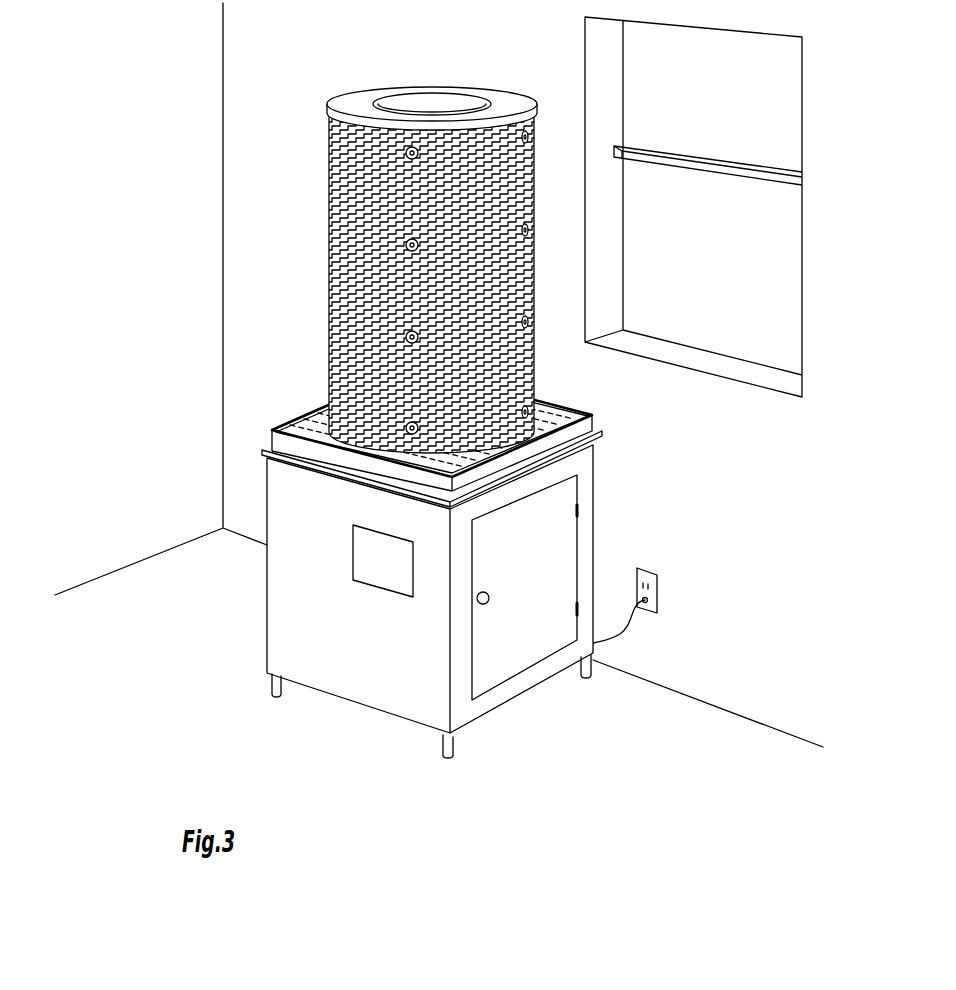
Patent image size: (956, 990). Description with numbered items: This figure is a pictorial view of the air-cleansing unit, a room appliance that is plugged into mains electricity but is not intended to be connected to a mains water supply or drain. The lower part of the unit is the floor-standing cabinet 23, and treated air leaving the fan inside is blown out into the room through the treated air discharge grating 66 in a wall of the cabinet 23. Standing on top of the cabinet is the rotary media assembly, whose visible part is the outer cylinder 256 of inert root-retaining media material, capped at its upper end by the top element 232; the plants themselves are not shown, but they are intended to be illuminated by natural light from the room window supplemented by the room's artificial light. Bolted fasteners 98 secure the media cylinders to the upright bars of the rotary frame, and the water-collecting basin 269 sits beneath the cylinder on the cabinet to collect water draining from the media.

The floor-standing cabinet 23 is at (292, 624).
The treated air discharge grating 66 is at (383, 573).
The bolted fasteners 98 is at (407, 337).
The cover 232 is at (357, 105).
The outer cylinder 256 is at (343, 240).
The water-collecting basin 269 is at (315, 427).